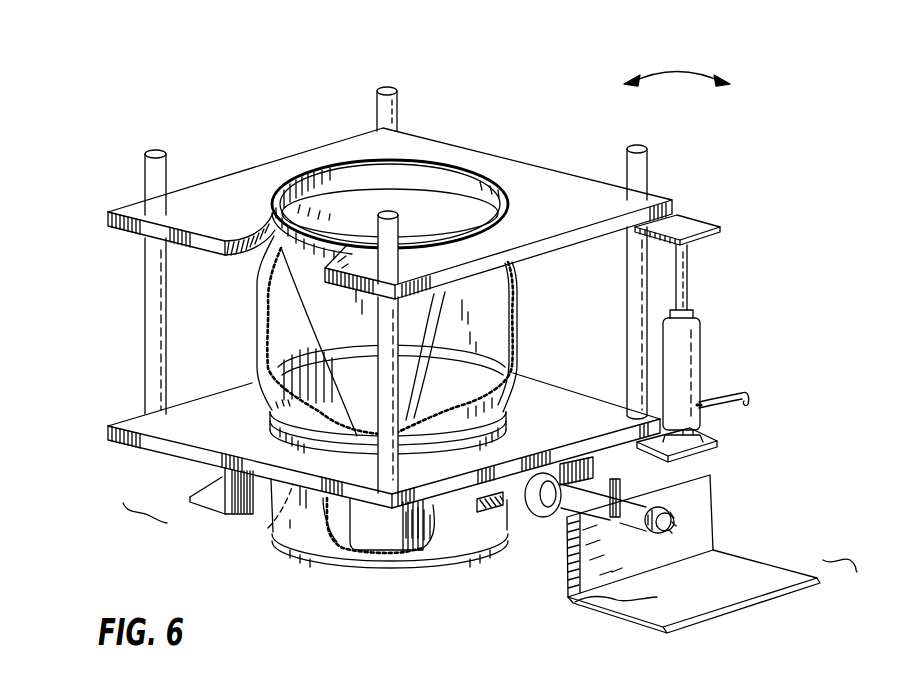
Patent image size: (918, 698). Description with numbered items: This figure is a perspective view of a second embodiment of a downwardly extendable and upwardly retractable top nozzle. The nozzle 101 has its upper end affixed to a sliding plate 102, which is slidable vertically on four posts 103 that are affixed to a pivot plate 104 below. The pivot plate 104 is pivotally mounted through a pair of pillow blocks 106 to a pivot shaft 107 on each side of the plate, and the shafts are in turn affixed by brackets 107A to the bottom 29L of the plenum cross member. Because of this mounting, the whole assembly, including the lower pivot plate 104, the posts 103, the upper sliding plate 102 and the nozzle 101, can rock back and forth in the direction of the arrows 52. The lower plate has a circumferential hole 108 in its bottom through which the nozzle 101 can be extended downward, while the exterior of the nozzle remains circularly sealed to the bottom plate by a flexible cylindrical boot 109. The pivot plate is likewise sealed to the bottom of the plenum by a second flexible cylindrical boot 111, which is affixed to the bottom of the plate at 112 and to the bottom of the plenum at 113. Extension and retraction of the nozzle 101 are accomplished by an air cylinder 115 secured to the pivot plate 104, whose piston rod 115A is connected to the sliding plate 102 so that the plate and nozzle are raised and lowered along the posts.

The arrows 52 is at (667, 72).
The nozzle 101 is at (453, 190).
The sliding plate 102 is at (227, 192).
The posts 103 is at (152, 182).
The pivot plate 104 is at (133, 422).
The pillow blocks 106 is at (520, 514).
The pivot shaft 107 is at (560, 513).
The brackets 107A is at (217, 495).
The circumferential hole 108 is at (467, 382).
The flexible cylindrical boot 109 is at (262, 320).
The flexible cylindrical boot 111 is at (305, 530).
The boot attachment to plate 112 is at (268, 528).
The boot attachment to plenum 113 is at (287, 543).
The air cylinder 115 is at (690, 360).
The piston rod 115A is at (690, 262).
The bottom of the plenum cross member 29L is at (620, 622).